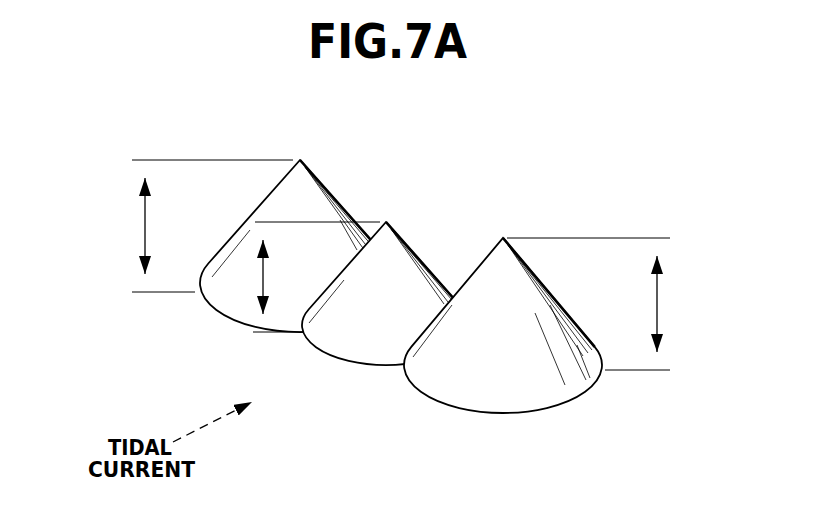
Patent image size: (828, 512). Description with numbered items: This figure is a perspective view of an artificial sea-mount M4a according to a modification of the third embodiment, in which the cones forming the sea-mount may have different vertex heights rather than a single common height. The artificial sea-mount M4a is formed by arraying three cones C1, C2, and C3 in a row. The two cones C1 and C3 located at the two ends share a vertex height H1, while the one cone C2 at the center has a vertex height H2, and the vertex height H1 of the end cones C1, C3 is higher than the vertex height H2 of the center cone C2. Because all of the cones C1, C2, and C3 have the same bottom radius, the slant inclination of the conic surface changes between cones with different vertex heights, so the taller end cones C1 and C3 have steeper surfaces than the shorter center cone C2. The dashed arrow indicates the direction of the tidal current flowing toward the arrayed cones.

The artificial sea-mount M4a is at (512, 160).
The cone C1 is at (325, 187).
The cone C2 is at (408, 242).
The cone C3 is at (563, 313).
The vertex height H1 is at (401, 265).
The vertex height H2 is at (316, 277).